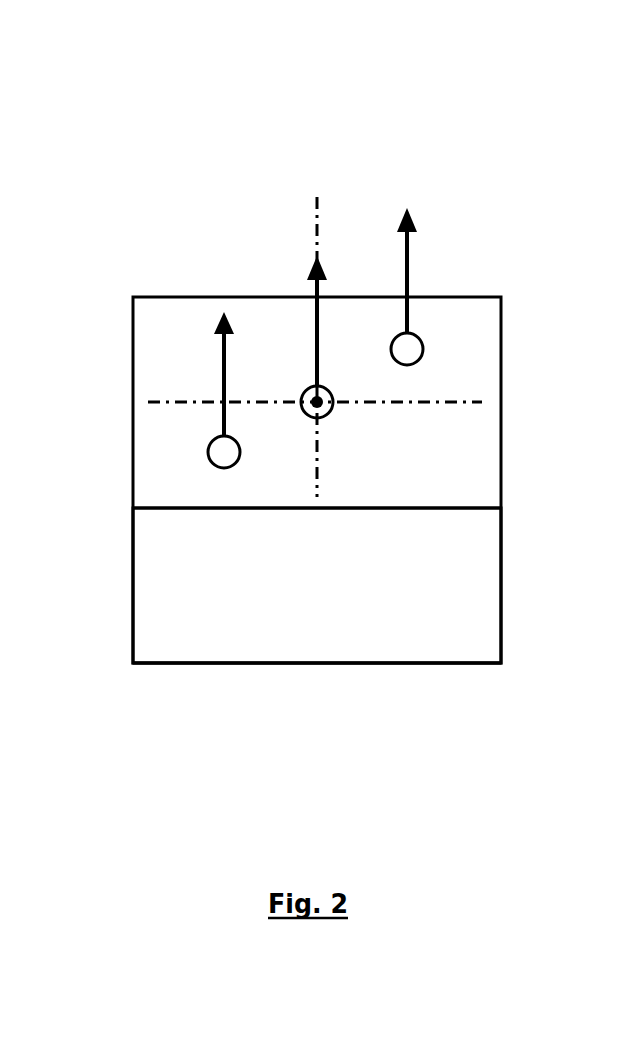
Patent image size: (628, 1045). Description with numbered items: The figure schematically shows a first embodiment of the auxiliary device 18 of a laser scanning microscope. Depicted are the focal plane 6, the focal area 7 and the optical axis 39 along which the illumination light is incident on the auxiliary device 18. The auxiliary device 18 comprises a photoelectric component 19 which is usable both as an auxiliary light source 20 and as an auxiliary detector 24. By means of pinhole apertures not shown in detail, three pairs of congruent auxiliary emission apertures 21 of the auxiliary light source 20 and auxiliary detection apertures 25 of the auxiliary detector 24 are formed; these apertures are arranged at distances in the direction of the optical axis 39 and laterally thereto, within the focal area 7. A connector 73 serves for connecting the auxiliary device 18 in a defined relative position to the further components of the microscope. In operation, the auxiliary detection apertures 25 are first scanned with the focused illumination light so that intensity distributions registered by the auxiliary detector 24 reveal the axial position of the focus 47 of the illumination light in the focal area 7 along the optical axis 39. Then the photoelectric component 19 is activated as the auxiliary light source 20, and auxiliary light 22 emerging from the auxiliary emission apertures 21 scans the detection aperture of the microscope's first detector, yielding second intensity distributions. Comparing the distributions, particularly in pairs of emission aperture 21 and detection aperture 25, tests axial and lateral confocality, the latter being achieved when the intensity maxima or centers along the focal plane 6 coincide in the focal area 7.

The focal plane 6 is at (482, 402).
The focal area 7 is at (345, 429).
The auxiliary device 18 is at (345, 430).
The photoelectric component 19 is at (375, 620).
The auxiliary light source 20 is at (375, 620).
The auxiliary emission apertures 21 is at (355, 372).
The auxiliary light 22 is at (220, 360).
The auxiliary detector 24 is at (422, 632).
The auxiliary detection apertures 25 is at (207, 458).
The optical axis 39 is at (315, 205).
The focus 47 is at (308, 397).
The connector 73 is at (239, 670).